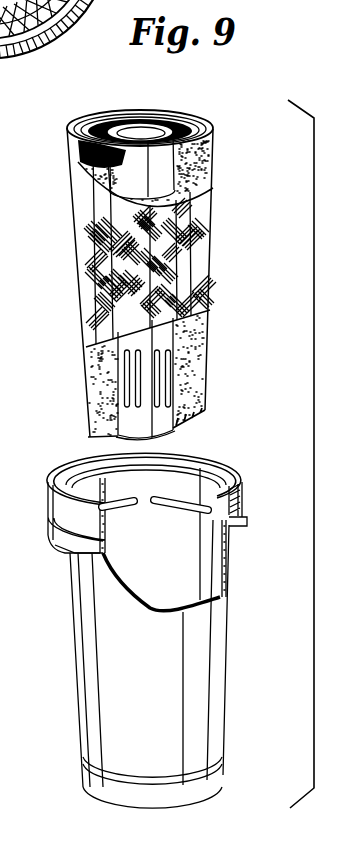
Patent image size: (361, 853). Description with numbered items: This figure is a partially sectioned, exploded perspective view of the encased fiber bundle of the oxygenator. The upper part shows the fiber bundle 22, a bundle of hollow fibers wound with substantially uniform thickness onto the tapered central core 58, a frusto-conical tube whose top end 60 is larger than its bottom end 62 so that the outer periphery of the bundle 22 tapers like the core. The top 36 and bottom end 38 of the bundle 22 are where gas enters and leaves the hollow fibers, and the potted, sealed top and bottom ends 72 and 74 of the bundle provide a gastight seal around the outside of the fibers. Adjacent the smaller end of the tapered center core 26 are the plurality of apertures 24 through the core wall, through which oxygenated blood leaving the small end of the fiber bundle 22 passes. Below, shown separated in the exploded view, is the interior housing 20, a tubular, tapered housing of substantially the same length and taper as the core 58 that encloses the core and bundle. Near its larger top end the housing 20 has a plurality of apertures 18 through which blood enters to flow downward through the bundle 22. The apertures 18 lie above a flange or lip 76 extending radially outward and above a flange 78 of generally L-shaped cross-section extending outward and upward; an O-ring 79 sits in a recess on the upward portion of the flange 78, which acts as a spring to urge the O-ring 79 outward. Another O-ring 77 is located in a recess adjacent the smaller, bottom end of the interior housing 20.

The apertures 18 is at (247, 519).
The interior housing 20 is at (198, 640).
The fiber bundle 22 is at (207, 333).
The apertures 24 is at (158, 363).
The tapered center core 26 is at (177, 431).
The top of the fiber bundle 36 is at (197, 118).
The bottom end of the fiber bundle 38 is at (90, 436).
The tapered central core 58 is at (165, 176).
The top end 60 is at (142, 111).
The bottom end 62 is at (125, 440).
The top end of the fiber bundle 72 is at (206, 134).
The bottom end of the fiber bundle 74 is at (207, 413).
The flange or lip 76 is at (238, 527).
The O-ring 77 is at (217, 780).
The flange 78 is at (244, 492).
The O-ring 79 is at (50, 522).